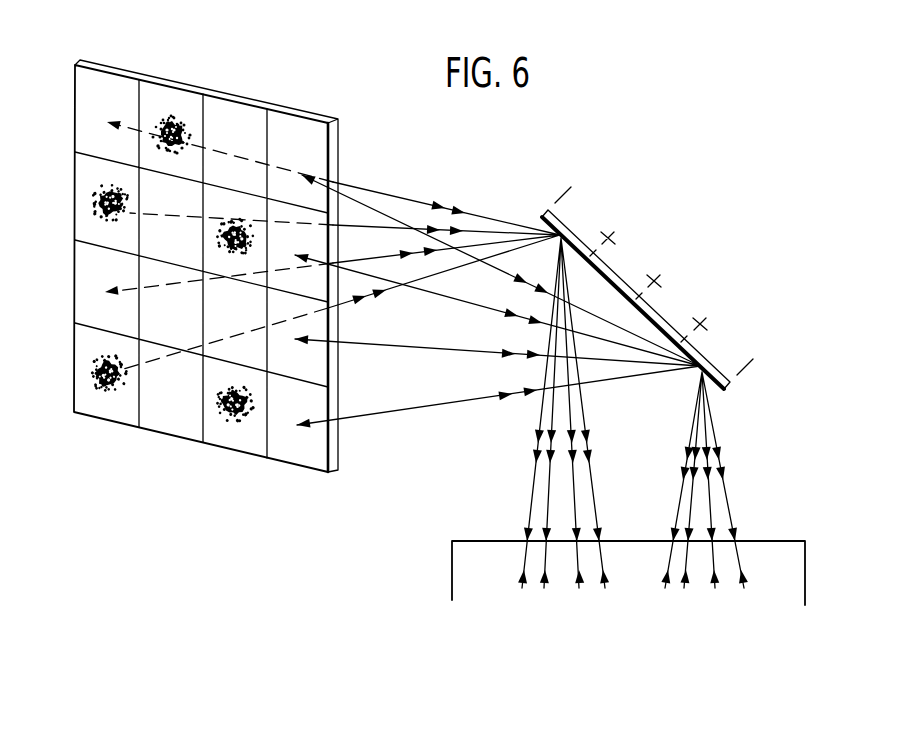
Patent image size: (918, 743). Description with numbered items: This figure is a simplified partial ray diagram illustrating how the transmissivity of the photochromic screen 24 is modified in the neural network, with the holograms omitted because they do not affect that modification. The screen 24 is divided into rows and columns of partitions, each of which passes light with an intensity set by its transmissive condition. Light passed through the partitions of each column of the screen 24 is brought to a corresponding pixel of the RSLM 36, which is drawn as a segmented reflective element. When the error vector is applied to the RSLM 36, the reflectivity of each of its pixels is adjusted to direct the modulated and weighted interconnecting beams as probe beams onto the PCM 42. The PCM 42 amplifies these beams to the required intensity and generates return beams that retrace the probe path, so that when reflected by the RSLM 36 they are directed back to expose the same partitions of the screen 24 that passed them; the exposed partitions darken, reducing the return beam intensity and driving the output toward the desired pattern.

The photochromic screen 24 is at (115, 422).
The RSLM 36 is at (544, 214).
The PCM 42 is at (452, 561).